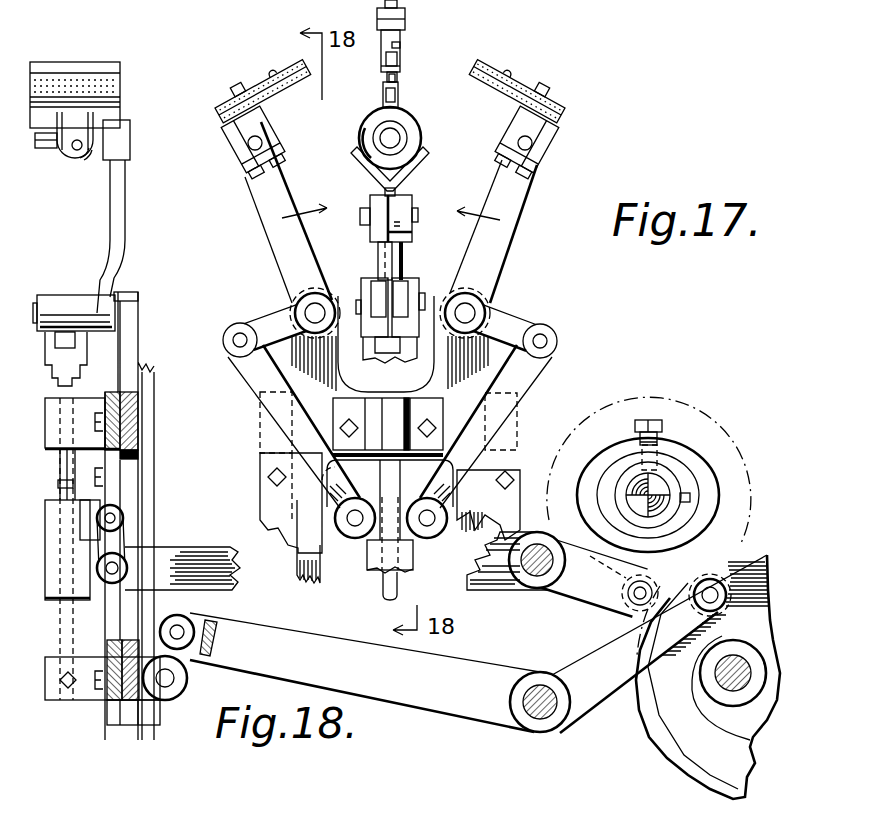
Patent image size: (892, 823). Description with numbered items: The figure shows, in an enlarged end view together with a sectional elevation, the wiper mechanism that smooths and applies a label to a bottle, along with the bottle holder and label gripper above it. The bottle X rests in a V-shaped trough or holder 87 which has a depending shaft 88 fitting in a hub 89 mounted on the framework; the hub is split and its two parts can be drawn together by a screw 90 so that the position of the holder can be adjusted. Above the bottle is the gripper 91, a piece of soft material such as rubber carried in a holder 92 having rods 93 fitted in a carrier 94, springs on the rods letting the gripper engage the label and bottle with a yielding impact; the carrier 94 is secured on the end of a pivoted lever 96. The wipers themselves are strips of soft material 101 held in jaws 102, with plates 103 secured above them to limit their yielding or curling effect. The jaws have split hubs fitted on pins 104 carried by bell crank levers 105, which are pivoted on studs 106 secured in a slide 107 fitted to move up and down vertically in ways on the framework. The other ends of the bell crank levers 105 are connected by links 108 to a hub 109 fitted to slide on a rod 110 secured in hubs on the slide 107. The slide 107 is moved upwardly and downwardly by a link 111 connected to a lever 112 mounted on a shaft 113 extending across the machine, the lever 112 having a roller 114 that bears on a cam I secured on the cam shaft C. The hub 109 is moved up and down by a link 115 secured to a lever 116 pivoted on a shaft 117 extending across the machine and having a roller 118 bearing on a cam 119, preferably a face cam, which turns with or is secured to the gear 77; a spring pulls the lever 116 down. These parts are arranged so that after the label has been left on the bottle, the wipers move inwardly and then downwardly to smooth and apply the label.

In FIG. 17, the gear 77 is at (676, 404).
In FIG. 17, the V-shaped trough or holder 87 is at (415, 162).
In FIG. 17, the depending shaft 88 is at (406, 265).
In FIG. 17, the hub 89 is at (372, 296).
In FIG. 17, the screw 90 is at (420, 307).
In FIG. 17, the gripper 91 is at (388, 100).
In FIG. 17, the holder 92 is at (390, 78).
In FIG. 17, the rods 93 is at (403, 43).
In FIG. 17, the carrier 94 is at (398, 62).
In FIG. 17, the pivoted lever 96 is at (405, 13).
In FIG. 17, the wipers 101 is at (295, 88).
In FIG. 18, the wipers 101 is at (117, 80).
In FIG. 17, the jaws 102 is at (240, 140).
In FIG. 18, the jaws 102 is at (81, 162).
In FIG. 17, the plates 103 is at (268, 88).
In FIG. 17, the pins 104 is at (262, 143).
In FIG. 18, the pins 104 is at (45, 140).
In FIG. 17, the bell crank levers 105 is at (262, 229).
In FIG. 18, the bell crank levers 105 is at (123, 218).
In FIG. 17, the studs 106 is at (310, 310).
In FIG. 18, the studs 106 is at (32, 312).
In FIG. 17, the slide 107 is at (327, 577).
In FIG. 18, the slide 107 is at (134, 346).
In FIG. 17, the links 108 is at (262, 400).
In FIG. 18, the links 108 is at (64, 383).
In FIG. 17, the hub 109 is at (413, 560).
In FIG. 18, the hub 109 is at (47, 598).
In FIG. 17, the rod 110 is at (400, 590).
In FIG. 18, the rod 110 is at (68, 480).
In FIG. 18, the link 111 is at (192, 660).
In FIG. 17, the lever 112 is at (455, 708).
In FIG. 17, the shaft 113 is at (542, 718).
In FIG. 17, the roller 114 is at (740, 565).
In FIG. 18, the link 115 is at (130, 543).
In FIG. 17, the lever 116 is at (493, 584).
In FIG. 18, the lever 116 is at (214, 590).
In FIG. 17, the shaft 117 is at (540, 575).
In FIG. 17, the roller 118 is at (620, 580).
In FIG. 17, the cam 119 is at (700, 480).
In FIG. 17, the bottle X is at (407, 128).
In FIG. 17, the cam shaft C is at (712, 675).
In FIG. 17, the cam I is at (700, 783).